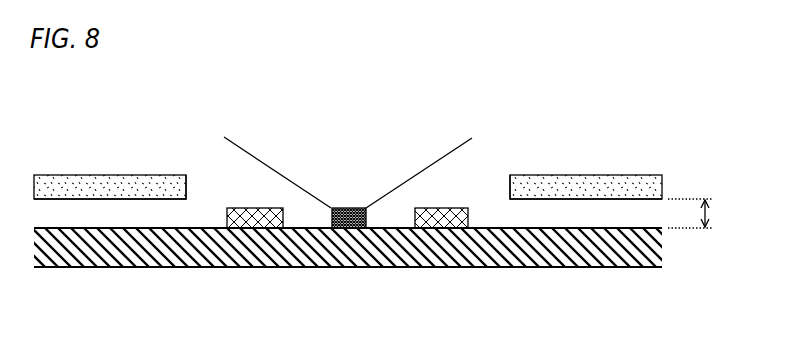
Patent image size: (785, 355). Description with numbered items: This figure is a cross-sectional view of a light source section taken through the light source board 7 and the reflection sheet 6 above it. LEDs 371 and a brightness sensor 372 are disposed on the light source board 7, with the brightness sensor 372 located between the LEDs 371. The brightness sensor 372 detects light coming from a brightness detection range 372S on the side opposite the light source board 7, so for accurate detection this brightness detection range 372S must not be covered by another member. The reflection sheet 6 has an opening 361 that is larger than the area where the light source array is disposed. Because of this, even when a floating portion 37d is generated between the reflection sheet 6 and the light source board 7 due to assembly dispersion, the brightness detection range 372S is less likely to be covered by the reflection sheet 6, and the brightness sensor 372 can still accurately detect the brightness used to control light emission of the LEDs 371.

The reflection sheet 6 is at (108, 176).
The opening 361 is at (181, 177).
The light source board 7 is at (97, 250).
The LED 371 is at (460, 228).
The brightness sensor 372 is at (346, 228).
The brightness detection range 372S is at (462, 143).
The floating portion 37d is at (711, 215).